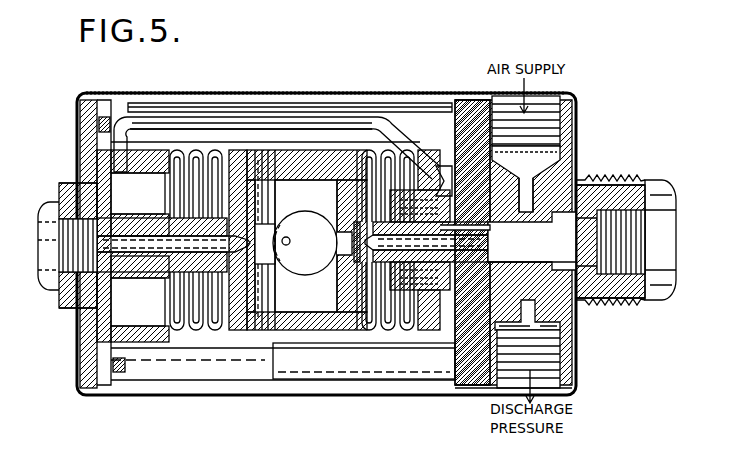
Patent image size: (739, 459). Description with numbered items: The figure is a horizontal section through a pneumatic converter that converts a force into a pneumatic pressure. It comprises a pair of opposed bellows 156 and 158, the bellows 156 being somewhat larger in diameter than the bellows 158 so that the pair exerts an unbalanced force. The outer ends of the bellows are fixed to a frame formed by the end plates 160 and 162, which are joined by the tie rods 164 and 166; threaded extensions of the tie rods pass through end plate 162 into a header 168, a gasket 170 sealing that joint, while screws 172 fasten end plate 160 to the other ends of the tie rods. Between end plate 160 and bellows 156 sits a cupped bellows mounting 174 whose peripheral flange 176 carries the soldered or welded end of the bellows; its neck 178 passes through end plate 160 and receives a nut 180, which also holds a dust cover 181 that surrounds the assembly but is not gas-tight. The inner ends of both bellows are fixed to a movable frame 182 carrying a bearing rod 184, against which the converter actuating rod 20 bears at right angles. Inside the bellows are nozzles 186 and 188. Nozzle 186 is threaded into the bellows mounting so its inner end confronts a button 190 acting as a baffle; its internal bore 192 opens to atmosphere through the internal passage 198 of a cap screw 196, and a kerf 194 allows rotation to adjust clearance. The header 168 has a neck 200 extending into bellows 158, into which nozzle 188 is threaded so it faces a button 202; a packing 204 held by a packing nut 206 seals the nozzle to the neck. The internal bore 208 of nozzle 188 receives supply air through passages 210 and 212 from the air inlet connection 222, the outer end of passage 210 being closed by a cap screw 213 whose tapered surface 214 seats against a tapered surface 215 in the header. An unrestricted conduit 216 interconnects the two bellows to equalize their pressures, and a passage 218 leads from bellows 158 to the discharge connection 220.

The converter actuating rod 20 is at (289, 244).
The bellows 156 is at (190, 330).
The bellows 158 is at (370, 330).
The end plate 160 is at (82, 145).
The end plate 162 is at (464, 394).
The tie rod 164 is at (336, 380).
The tie rod 166 is at (392, 103).
The header 168 is at (574, 133).
The gasket 170 is at (457, 96).
The screws 172 is at (82, 360).
The cupped bellows mounting 174 is at (100, 325).
The peripheral flange 176 is at (125, 340).
The neck 178 is at (60, 305).
The nut 180 is at (60, 190).
The dust cover 181 is at (190, 93).
The movable frame 182 is at (305, 330).
The bearing rod 184 is at (255, 330).
The nozzle 186 is at (148, 264).
The nozzle 188 is at (488, 249).
The button 190 is at (248, 222).
The internal bore 192 is at (136, 240).
The kerf 194 is at (106, 244).
The cap screw 196 is at (40, 285).
The internal passage 198 is at (40, 258).
The neck 200 is at (522, 187).
The button 202 is at (355, 265).
The packing 204 is at (410, 272).
The packing nut 206 is at (400, 330).
The internal bore 208 is at (490, 228).
The passage 210 is at (588, 180).
The passage 212 is at (534, 192).
The cap screw 213 is at (666, 190).
The tapered surface 214 is at (590, 247).
The tapered surface 215 is at (532, 275).
The unrestricted conduit 216 is at (242, 124).
The passage 218 is at (530, 313).
The discharge connection 220 is at (560, 368).
The air inlet connection 222 is at (576, 95).